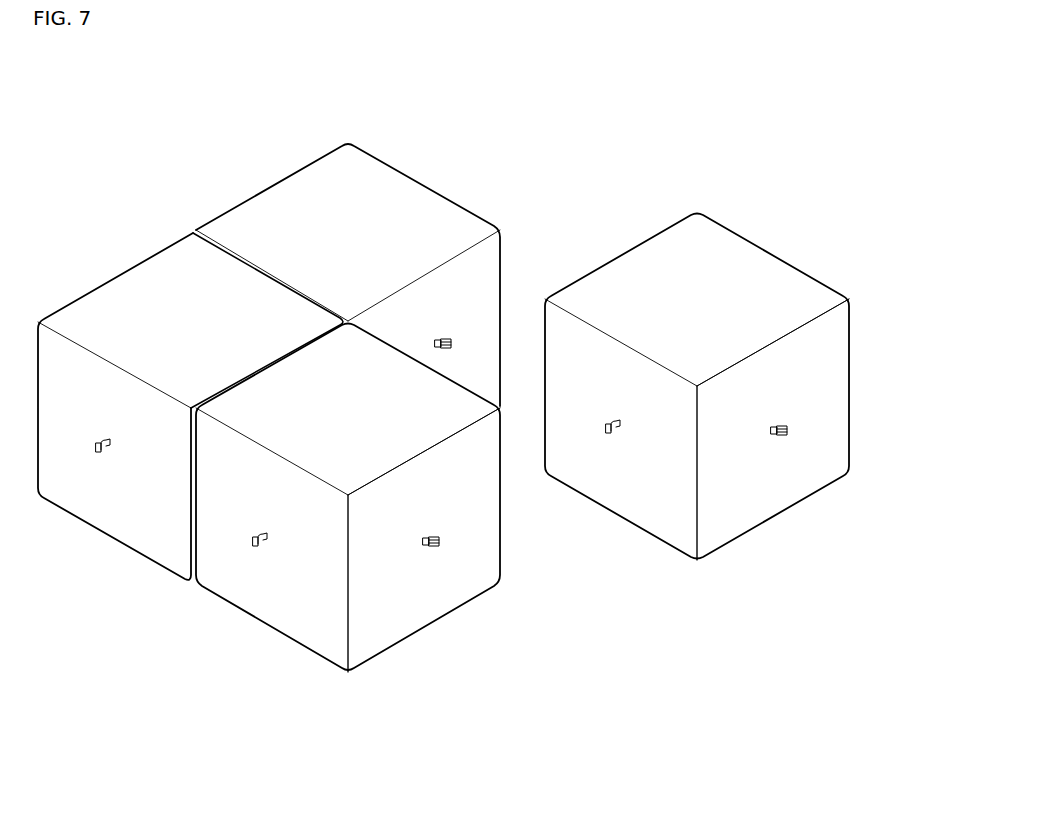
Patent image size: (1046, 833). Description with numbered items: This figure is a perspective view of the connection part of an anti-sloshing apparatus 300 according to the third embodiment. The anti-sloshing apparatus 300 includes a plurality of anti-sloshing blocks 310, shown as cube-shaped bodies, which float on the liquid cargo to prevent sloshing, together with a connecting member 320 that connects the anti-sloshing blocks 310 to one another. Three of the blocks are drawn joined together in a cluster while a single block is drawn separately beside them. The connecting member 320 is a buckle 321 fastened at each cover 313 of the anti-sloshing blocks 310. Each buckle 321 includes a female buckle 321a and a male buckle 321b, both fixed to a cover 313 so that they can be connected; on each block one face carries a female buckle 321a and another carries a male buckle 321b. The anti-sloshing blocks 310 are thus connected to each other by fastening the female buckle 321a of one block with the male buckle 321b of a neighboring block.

The anti-sloshing apparatus 300 is at (502, 98).
The anti-sloshing block 310 is at (232, 617).
The cover 313 is at (467, 602).
The connecting member 320 is at (353, 744).
The buckle 321 is at (295, 712).
The female buckle 321a is at (262, 548).
The male buckle 321b is at (430, 548).